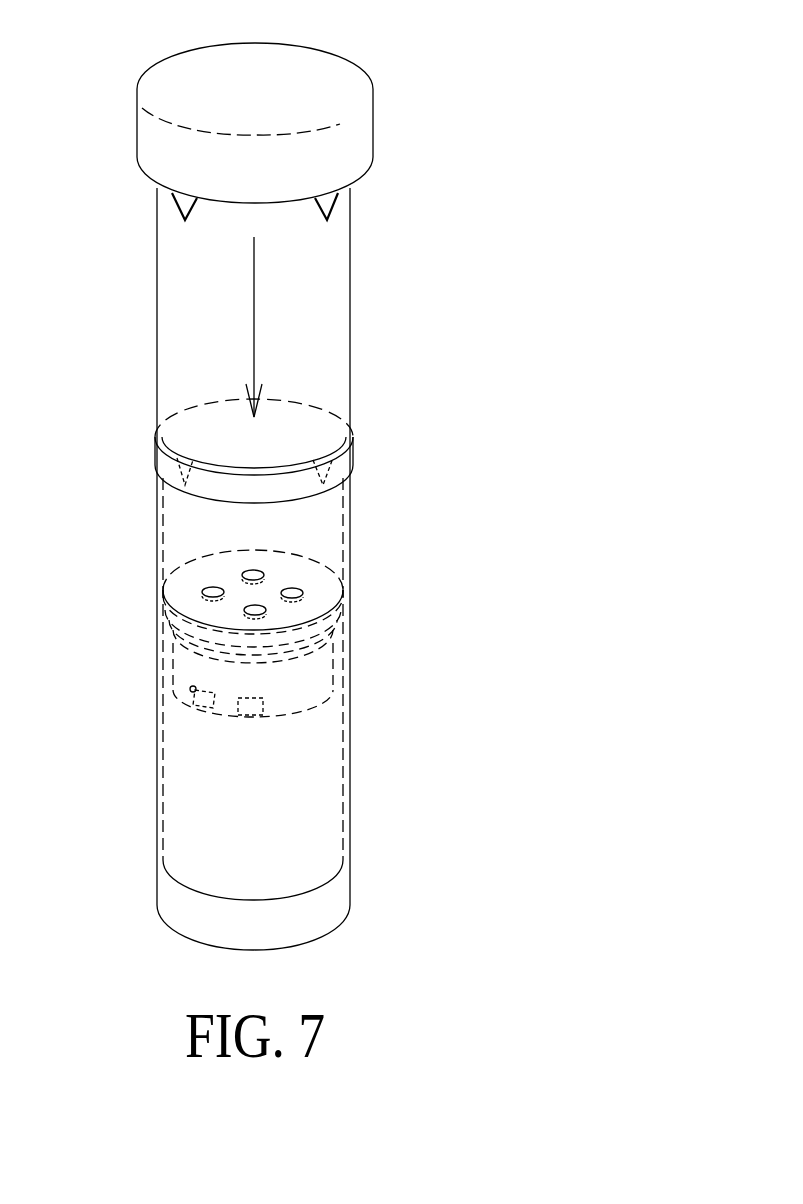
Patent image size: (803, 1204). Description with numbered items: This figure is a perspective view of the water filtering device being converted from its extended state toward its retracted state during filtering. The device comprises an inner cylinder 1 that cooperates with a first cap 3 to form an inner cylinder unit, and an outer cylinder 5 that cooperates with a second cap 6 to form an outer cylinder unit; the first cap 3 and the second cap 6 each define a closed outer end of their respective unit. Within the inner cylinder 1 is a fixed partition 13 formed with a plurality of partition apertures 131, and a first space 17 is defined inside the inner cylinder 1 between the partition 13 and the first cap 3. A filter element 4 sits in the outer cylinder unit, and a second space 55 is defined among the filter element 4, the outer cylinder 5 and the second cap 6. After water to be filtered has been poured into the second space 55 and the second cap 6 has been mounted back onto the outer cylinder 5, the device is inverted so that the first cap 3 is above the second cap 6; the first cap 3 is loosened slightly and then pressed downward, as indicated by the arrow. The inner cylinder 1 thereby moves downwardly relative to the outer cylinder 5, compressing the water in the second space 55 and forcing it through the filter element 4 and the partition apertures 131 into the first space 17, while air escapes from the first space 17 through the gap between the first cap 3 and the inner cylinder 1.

The inner cylinder 1 is at (350, 292).
The first cap 3 is at (333, 78).
The filter element 4 is at (236, 700).
The outer cylinder 5 is at (365, 668).
The second cap 6 is at (298, 908).
The partition 13 is at (212, 572).
The first space 17 is at (205, 284).
The second space 55 is at (205, 797).
The partition apertures 131 is at (300, 585).